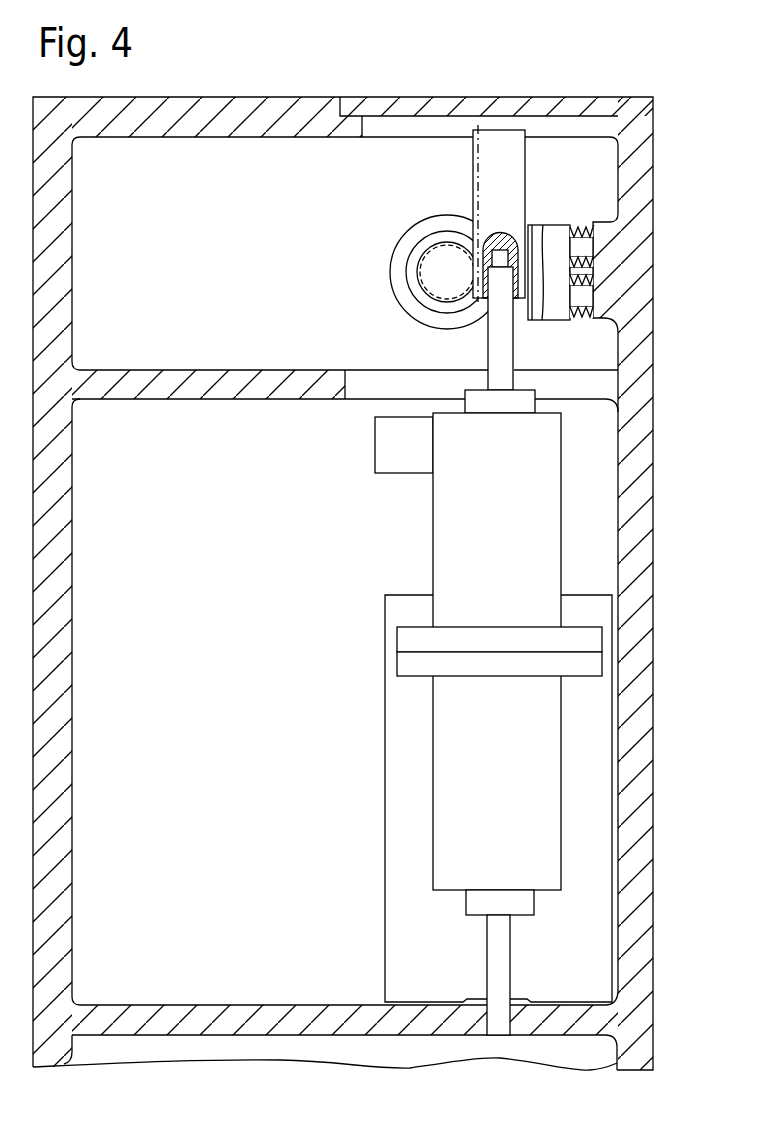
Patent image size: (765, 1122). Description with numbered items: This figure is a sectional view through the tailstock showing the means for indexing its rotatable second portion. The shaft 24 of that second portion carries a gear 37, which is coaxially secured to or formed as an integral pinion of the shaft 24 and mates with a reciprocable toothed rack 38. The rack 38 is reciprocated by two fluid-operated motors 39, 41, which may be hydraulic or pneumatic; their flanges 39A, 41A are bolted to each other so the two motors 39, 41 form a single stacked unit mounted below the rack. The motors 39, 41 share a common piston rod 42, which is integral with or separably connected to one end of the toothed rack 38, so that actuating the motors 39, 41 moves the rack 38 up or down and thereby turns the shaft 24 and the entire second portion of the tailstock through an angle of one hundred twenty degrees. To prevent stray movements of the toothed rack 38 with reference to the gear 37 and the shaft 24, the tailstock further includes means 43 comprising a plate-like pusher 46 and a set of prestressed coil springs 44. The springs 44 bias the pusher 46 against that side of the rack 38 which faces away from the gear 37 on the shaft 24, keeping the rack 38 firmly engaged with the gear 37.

The shaft 24 is at (404, 206).
The gear 37 is at (440, 238).
The toothed rack 38 is at (497, 158).
The means for preventing stray movements 43 is at (566, 192).
The prestressed coil springs 44 is at (595, 261).
The plate-like pusher 46 is at (562, 310).
The common piston rod 42 is at (498, 353).
The fluid-operated motor 39 is at (543, 518).
The flange 39A is at (447, 637).
The fluid-operated motor 41 is at (541, 760).
The flange 41A is at (485, 662).